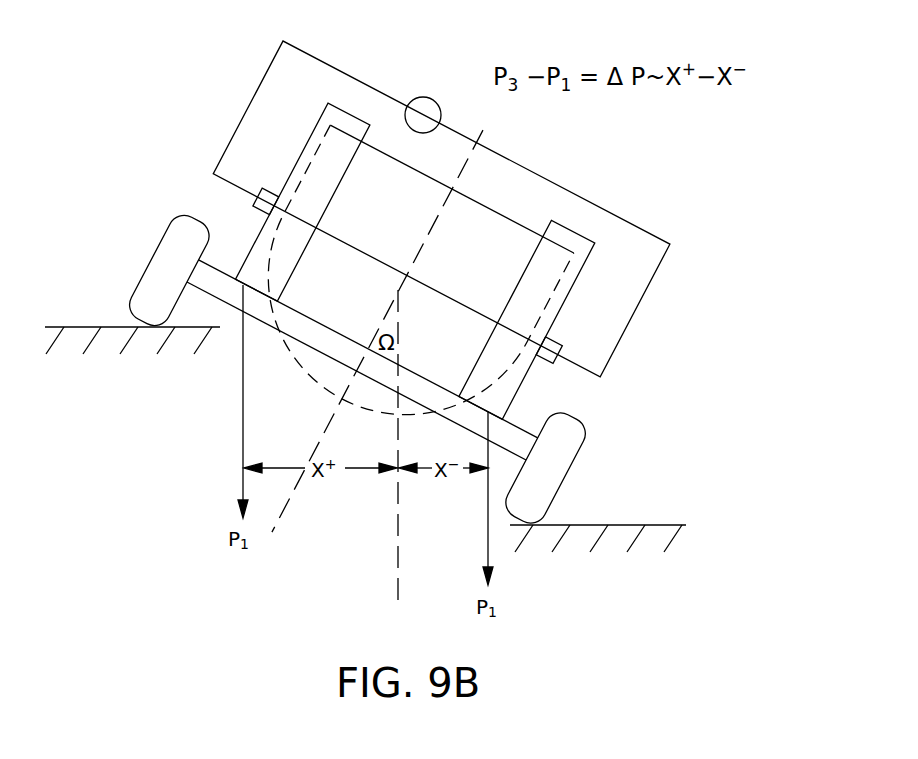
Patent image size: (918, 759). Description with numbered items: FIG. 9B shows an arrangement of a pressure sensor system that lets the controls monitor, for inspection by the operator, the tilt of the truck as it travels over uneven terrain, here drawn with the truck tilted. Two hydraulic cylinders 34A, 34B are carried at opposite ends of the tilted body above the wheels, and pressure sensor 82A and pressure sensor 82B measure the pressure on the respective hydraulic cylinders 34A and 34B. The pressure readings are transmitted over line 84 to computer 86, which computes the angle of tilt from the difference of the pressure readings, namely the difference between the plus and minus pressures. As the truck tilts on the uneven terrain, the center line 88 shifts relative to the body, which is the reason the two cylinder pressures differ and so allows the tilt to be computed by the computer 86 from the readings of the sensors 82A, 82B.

The line 84 is at (550, 180).
The hydraulic cylinder 34A is at (280, 160).
The hydraulic cylinder 34B is at (600, 335).
The pressure sensor 82A is at (255, 203).
The pressure sensor 82B is at (550, 360).
The computer 86 is at (423, 98).
The center line 88 is at (397, 553).